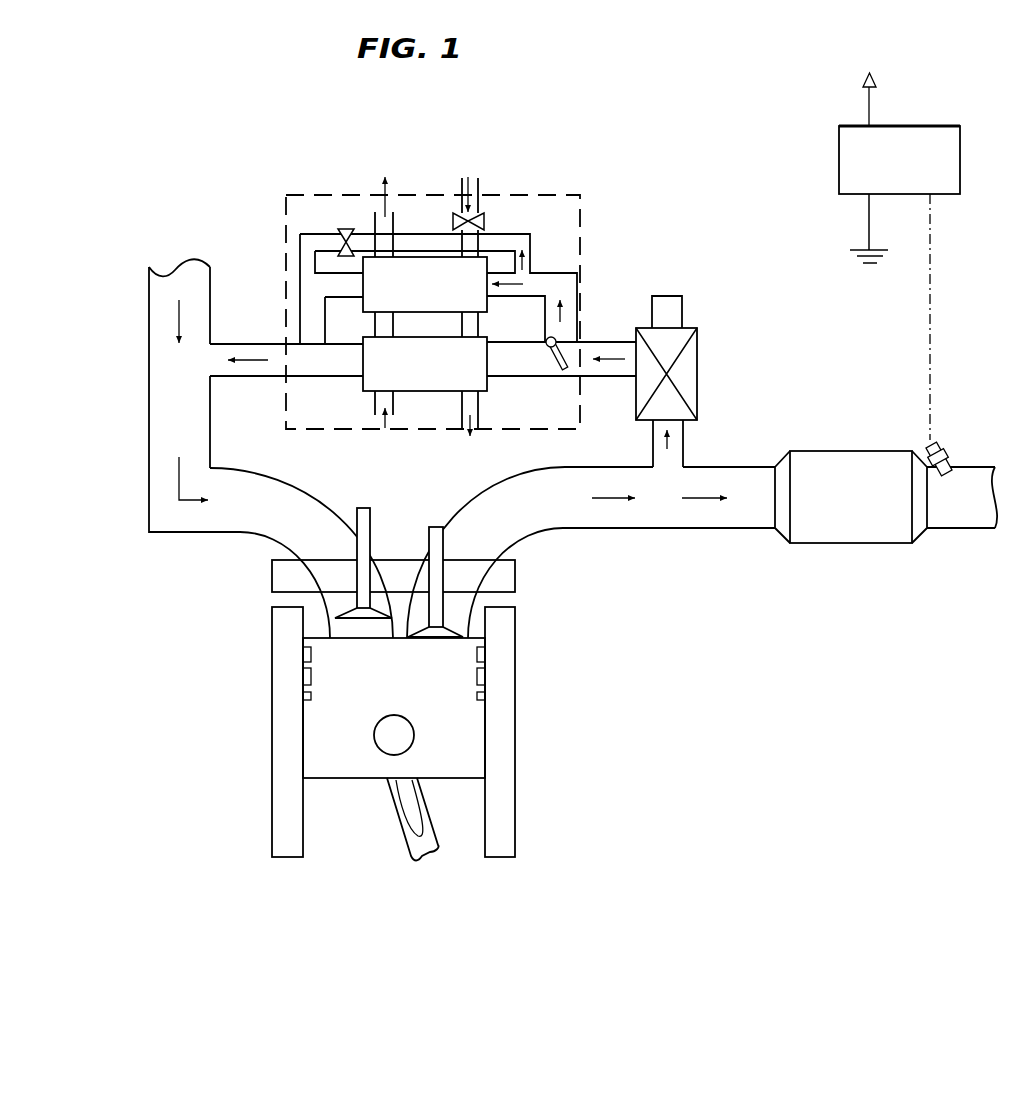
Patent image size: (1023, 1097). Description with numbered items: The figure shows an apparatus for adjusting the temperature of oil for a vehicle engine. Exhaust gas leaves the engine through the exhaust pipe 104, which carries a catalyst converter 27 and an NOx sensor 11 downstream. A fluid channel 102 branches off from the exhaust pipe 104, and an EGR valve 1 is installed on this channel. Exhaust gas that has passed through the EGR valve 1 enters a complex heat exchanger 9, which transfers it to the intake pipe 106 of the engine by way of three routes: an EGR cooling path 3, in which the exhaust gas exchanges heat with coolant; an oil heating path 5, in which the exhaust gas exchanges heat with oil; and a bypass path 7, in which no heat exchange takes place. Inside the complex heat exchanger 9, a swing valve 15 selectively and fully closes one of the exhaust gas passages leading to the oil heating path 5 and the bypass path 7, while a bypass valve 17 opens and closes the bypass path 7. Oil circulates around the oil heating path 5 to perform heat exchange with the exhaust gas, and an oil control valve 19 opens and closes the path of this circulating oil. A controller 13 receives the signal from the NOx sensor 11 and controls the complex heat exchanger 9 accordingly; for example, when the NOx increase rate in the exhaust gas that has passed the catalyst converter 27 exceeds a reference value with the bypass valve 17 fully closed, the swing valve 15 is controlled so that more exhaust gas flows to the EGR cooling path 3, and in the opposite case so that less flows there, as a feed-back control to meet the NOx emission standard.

The EGR valve 1 is at (673, 303).
The EGR cooling path 3 is at (370, 360).
The oil heating path 5 is at (407, 262).
The bypass path 7 is at (365, 238).
The complex heat exchanger 9 is at (548, 193).
The NOx sensor 11 is at (943, 442).
The controller 13 is at (839, 158).
The swing valve 15 is at (562, 343).
The bypass valve 17 is at (340, 232).
The oil control valve 19 is at (477, 217).
The catalyst converter 27 is at (850, 520).
The fluid channel 102 is at (683, 445).
The exhaust pipe 104 is at (707, 528).
The intake pipe 106 is at (149, 495).